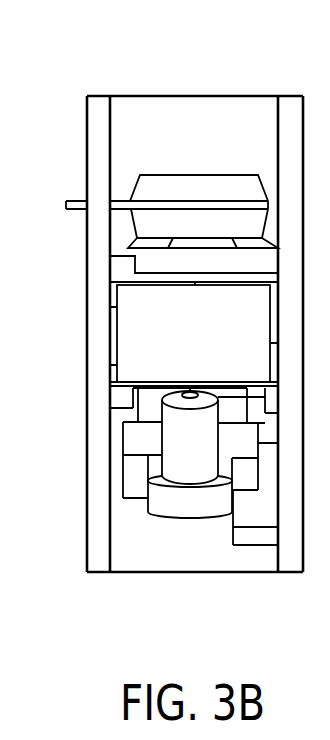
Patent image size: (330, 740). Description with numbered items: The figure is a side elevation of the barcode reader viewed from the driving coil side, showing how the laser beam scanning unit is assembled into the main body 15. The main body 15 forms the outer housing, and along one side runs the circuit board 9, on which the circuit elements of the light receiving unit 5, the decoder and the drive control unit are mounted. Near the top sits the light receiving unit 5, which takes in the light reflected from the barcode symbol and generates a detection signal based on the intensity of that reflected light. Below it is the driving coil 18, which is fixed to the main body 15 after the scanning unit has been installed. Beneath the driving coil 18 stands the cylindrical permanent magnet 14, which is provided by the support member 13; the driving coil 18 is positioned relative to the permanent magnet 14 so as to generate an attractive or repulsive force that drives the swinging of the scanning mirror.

The circuit board 9 is at (99, 102).
The main body 15 is at (291, 107).
The light receiving unit 5 is at (176, 182).
The driving coil 18 is at (120, 337).
The permanent magnet 14 is at (170, 442).
The support member 13 is at (177, 503).